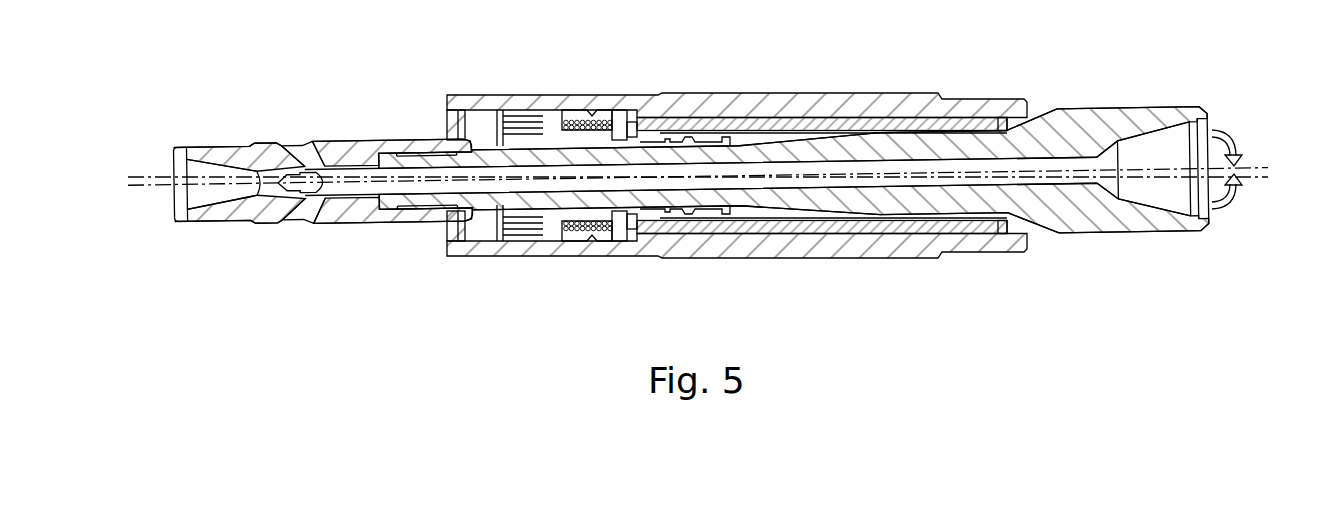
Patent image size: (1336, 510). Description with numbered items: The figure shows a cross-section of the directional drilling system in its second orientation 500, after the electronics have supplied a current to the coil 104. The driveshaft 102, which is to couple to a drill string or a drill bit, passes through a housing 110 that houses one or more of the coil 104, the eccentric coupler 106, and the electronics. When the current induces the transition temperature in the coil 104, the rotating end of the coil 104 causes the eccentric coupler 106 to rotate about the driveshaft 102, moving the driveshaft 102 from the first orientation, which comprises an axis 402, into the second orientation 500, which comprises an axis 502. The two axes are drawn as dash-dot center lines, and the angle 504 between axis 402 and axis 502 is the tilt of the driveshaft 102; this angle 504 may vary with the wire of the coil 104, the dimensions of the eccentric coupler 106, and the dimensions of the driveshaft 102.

The second orientation 500 is at (290, 46).
The driveshaft 102 is at (1094, 117).
The coil 104 is at (589, 110).
The eccentric coupler 106 is at (716, 120).
The housing 110 is at (888, 103).
The axis 402 is at (136, 214).
The axis 502 is at (712, 183).
The angle 504 is at (1233, 140).